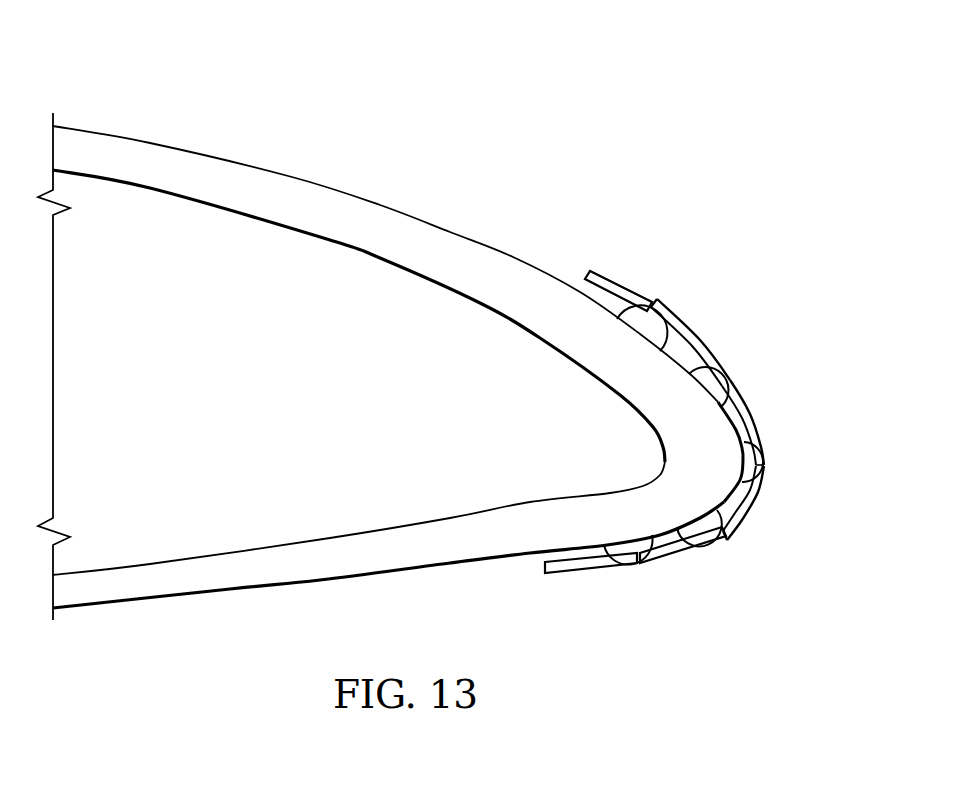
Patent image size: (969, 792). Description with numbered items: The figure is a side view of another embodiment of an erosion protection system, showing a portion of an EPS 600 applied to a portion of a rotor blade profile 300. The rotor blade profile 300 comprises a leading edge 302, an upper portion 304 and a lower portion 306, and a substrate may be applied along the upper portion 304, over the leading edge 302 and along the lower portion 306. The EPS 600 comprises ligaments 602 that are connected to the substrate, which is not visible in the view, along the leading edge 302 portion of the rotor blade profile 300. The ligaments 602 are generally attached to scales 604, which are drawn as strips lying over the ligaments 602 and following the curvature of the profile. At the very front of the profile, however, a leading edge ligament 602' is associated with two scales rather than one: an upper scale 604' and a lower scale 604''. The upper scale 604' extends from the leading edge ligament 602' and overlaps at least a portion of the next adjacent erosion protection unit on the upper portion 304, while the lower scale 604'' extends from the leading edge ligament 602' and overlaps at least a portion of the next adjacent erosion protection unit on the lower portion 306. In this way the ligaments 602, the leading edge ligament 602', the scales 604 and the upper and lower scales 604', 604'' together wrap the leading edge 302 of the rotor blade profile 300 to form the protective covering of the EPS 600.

The rotor blade profile 300 is at (462, 103).
The leading edge 302 is at (760, 459).
The upper portion 304 is at (293, 178).
The lower portion 306 is at (290, 587).
The EPS 600 is at (757, 297).
The ligaments 602 is at (680, 436).
The leading edge ligament 602' is at (804, 472).
The scales 604 is at (657, 302).
The upper scale 604' is at (779, 422).
The lower scale 604'' is at (779, 511).